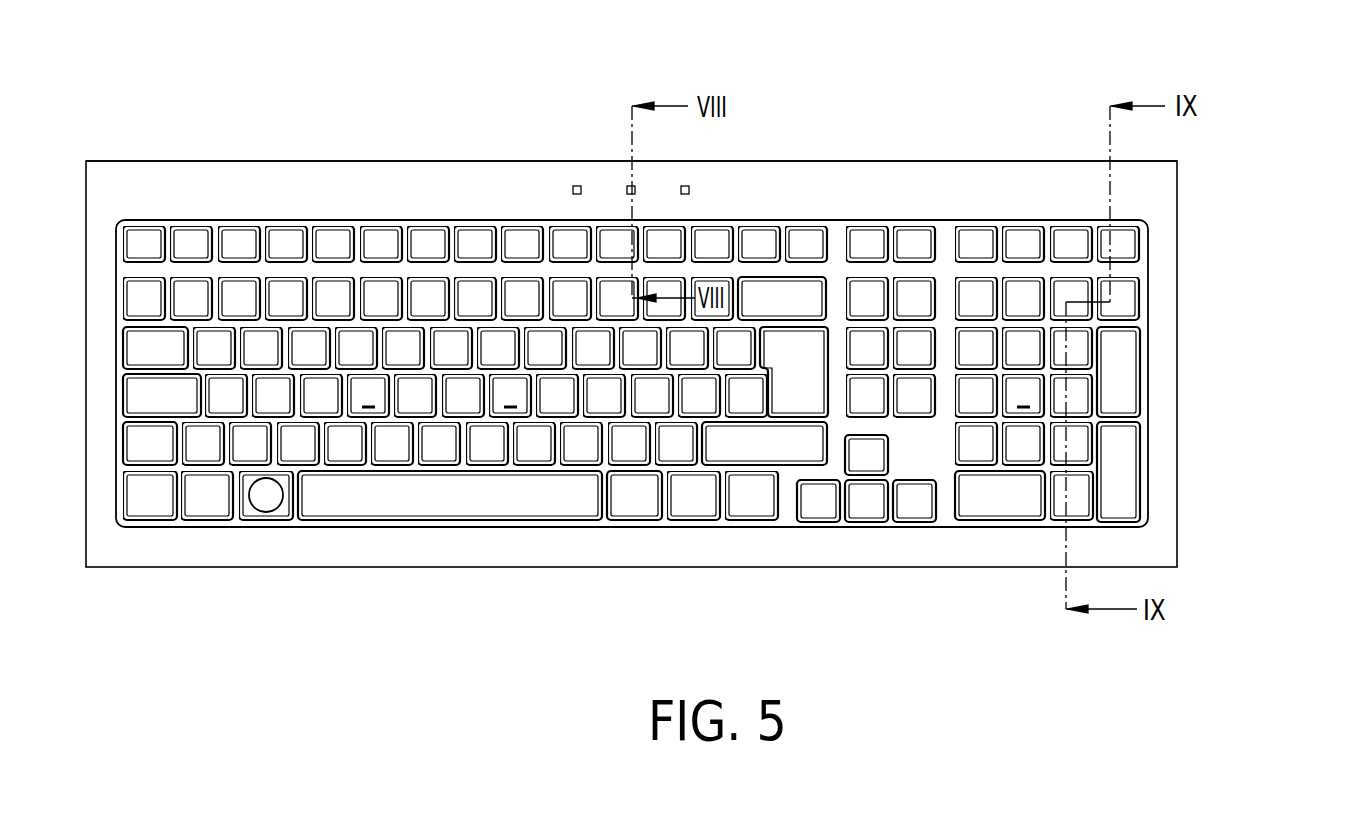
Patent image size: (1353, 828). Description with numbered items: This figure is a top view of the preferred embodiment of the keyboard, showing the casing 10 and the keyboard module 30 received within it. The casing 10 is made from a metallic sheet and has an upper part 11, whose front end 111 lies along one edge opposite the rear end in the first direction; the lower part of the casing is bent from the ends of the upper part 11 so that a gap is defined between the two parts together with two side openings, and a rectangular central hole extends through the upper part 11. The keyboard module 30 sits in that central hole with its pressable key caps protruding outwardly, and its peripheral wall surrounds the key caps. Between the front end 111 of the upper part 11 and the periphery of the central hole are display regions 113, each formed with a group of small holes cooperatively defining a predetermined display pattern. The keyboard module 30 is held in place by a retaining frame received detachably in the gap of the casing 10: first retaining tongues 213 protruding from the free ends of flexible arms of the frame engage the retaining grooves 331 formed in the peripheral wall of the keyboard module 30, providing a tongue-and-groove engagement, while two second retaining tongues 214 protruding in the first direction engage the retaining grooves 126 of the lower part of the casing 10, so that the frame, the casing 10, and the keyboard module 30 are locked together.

The casing 10 is at (680, 311).
The upper part 11 is at (1172, 403).
The front end 111 is at (998, 160).
The display region 113 is at (630, 186).
The keyboard module 30 is at (836, 250).
The first retaining tongue 213 is at (721, 389).
The retaining groove 331 is at (150, 221).
The second retaining tongue 214 is at (647, 142).
The retaining groove 126 is at (383, 221).